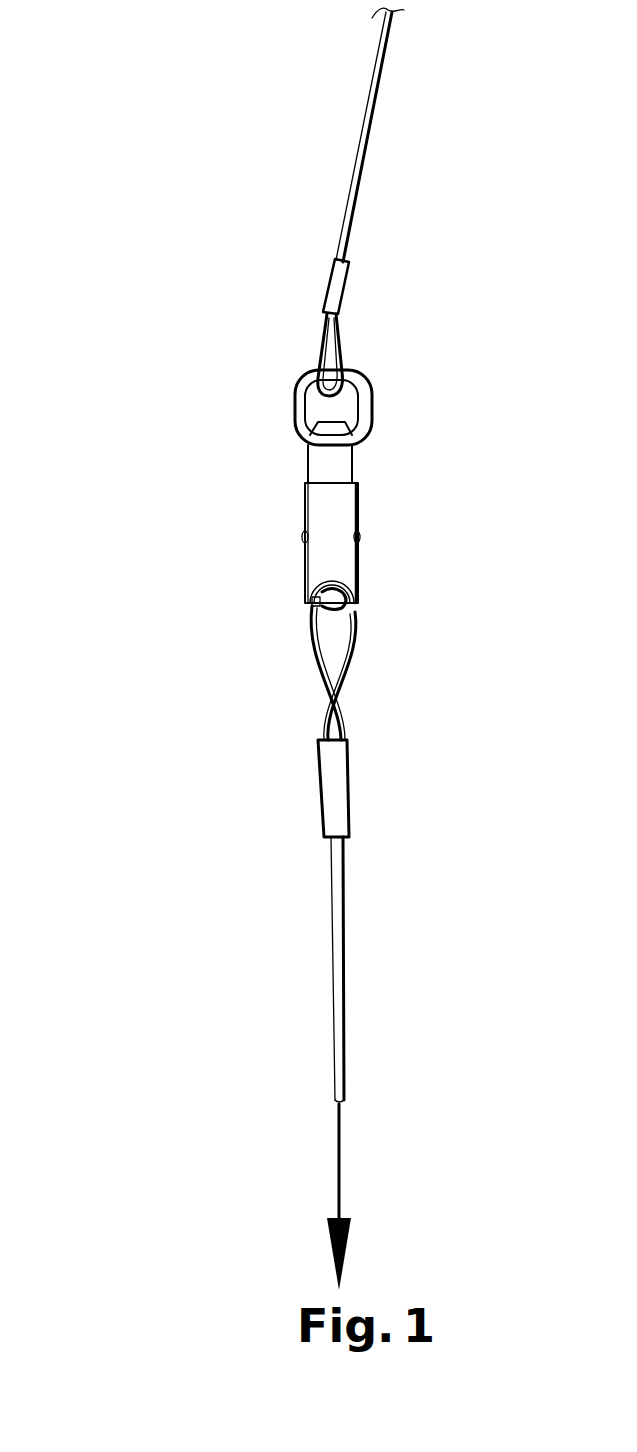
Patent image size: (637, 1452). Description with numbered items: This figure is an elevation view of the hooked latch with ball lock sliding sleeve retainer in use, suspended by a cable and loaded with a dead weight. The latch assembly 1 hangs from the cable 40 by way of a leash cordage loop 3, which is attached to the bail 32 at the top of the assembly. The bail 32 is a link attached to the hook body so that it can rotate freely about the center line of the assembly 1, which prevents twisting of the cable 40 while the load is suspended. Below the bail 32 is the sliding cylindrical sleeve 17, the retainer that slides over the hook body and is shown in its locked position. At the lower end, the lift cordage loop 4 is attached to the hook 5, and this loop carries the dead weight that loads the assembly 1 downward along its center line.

The latch assembly 1 is at (138, 438).
The leash cordage loop 3 is at (343, 350).
The bail 32 is at (370, 413).
The sliding cylindrical sleeve 17 is at (357, 507).
The hook 5 is at (316, 605).
The lift cordage loop 4 is at (353, 680).
The cable 40 is at (345, 965).